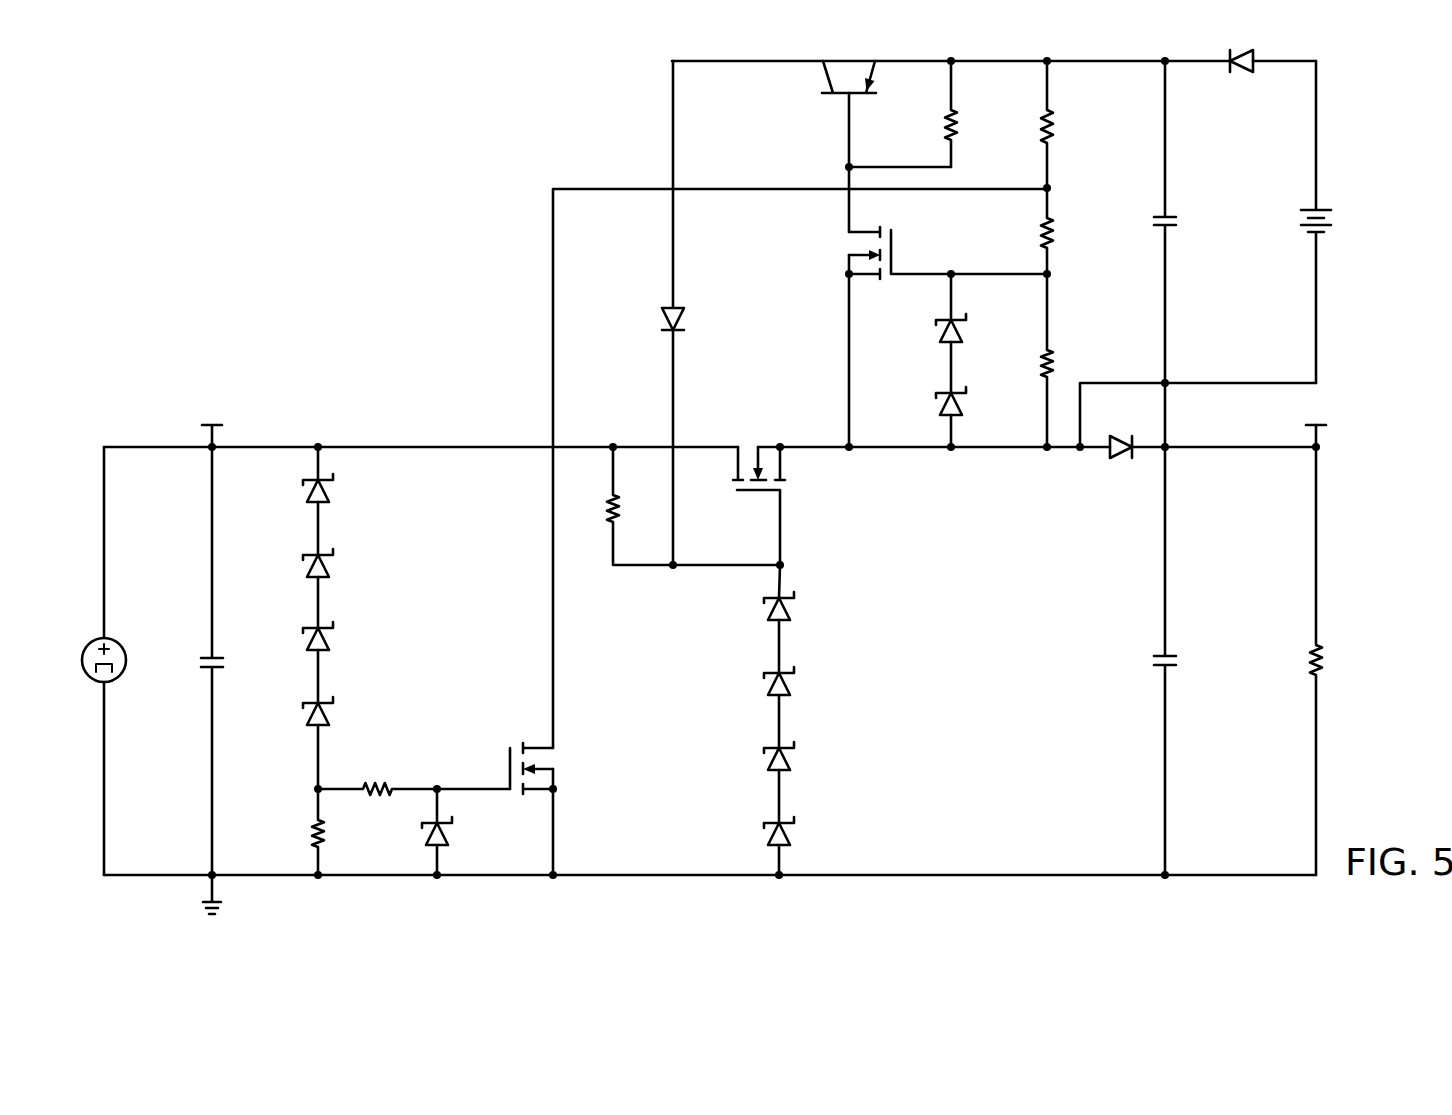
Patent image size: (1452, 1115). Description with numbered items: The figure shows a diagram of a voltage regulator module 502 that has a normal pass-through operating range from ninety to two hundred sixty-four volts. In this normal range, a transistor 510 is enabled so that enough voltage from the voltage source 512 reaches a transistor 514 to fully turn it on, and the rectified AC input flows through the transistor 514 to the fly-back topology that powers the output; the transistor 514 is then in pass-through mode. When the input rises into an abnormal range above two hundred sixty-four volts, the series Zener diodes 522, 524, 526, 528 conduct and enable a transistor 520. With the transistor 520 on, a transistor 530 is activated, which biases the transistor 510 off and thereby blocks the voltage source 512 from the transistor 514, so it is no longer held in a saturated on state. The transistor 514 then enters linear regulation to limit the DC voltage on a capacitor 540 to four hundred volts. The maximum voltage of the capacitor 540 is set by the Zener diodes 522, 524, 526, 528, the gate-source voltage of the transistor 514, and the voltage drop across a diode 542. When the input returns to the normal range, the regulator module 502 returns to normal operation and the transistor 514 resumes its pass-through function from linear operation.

The voltage regulator module 502 is at (285, 90).
The transistor 510 is at (825, 98).
The voltage source 512 is at (1335, 218).
The transistor 514 is at (741, 494).
The transistor 520 is at (509, 758).
The Zener diode 522 is at (331, 717).
The Zener diode 524 is at (331, 494).
The Zener diode 526 is at (331, 569).
The Zener diode 528 is at (331, 642).
The transistor 530 is at (894, 244).
The capacitor 540 is at (1178, 661).
The diode 542 is at (1127, 456).